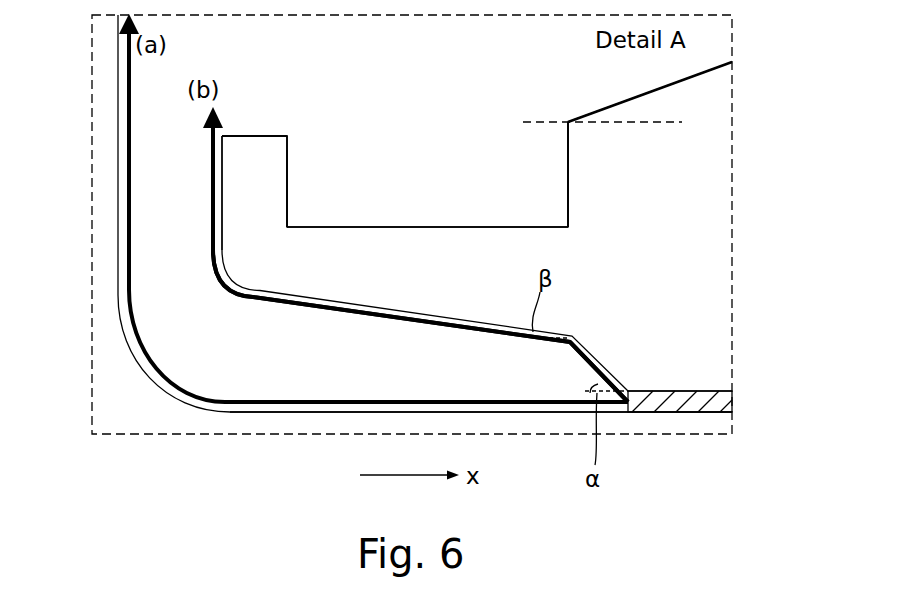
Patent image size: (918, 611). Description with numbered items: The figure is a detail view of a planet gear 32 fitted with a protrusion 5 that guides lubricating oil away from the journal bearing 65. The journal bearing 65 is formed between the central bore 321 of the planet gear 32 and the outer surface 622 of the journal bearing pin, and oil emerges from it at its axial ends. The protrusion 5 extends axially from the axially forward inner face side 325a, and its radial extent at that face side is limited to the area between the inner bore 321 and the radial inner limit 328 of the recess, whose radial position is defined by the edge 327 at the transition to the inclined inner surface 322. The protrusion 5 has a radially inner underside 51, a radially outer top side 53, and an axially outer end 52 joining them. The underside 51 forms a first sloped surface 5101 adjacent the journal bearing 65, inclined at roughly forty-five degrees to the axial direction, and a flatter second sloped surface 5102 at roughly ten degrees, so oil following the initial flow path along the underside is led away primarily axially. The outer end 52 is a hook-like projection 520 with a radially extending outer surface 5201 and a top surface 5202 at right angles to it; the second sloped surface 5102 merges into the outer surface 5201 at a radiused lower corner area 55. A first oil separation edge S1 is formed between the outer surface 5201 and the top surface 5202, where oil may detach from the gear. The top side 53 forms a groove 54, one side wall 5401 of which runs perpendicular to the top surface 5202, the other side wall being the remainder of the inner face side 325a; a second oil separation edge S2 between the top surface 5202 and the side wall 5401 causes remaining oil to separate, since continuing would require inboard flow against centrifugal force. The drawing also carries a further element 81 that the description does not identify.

The outer wall 81 is at (118, 144).
The axially outer end 52 is at (204, 160).
The outer surface 5201 is at (216, 195).
The lower corner area 55 is at (220, 285).
The first oil separation edge S1 is at (252, 150).
The hook-like projection 520 is at (253, 136).
The top surface 5202 is at (282, 136).
The second oil separation edge S2 is at (288, 137).
The side wall 5401 is at (288, 180).
The groove 54 is at (442, 128).
The top side 53 is at (440, 227).
The edge 327 is at (568, 121).
The axially forward inner face side 325a is at (568, 152).
The radial inner limit 328 is at (630, 123).
The inclined inner surface 322 is at (713, 67).
The planet gear 32 is at (712, 157).
The second sloped surface 5102 is at (328, 310).
The protrusion 5 is at (417, 288).
The underside 51 is at (472, 332).
The first sloped surface 5101 is at (584, 358).
The outer surface 622 is at (552, 413).
The central bore 321 is at (677, 393).
The journal bearing 65 is at (720, 405).